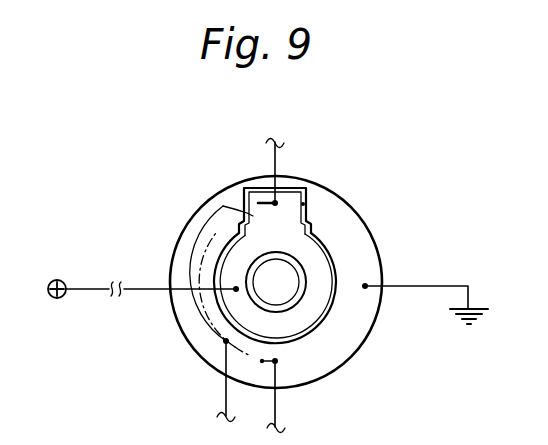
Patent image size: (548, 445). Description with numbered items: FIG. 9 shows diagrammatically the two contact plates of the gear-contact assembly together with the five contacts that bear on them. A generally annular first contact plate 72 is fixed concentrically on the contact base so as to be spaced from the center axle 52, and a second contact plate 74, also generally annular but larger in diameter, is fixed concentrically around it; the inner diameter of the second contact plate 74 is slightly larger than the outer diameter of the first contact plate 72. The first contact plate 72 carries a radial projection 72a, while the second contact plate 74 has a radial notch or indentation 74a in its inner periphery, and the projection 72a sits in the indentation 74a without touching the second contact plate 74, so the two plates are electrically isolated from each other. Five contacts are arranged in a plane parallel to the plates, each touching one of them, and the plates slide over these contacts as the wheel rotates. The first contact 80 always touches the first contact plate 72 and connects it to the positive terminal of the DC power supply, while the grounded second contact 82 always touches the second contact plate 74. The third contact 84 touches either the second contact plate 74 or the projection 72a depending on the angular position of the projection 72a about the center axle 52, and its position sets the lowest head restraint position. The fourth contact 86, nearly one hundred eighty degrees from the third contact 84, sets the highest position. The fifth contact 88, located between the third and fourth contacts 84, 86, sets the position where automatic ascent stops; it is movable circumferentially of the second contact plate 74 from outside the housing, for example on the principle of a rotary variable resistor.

The center axle 52 is at (288, 289).
The first contact plate 72 is at (300, 323).
The radial projection 72a is at (223, 206).
The second contact plate 74 is at (367, 244).
The radial notch or indentation 74a is at (303, 204).
The first contact 80 is at (236, 291).
The second contact 82 is at (366, 285).
The third contact 84 is at (275, 205).
The fourth contact 86 is at (277, 362).
The fifth contact 88 is at (226, 341).